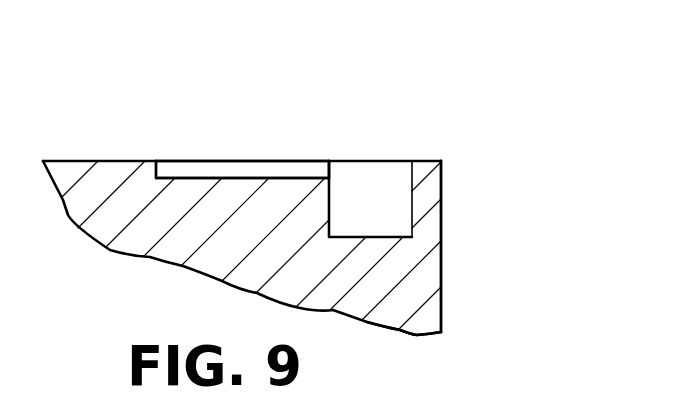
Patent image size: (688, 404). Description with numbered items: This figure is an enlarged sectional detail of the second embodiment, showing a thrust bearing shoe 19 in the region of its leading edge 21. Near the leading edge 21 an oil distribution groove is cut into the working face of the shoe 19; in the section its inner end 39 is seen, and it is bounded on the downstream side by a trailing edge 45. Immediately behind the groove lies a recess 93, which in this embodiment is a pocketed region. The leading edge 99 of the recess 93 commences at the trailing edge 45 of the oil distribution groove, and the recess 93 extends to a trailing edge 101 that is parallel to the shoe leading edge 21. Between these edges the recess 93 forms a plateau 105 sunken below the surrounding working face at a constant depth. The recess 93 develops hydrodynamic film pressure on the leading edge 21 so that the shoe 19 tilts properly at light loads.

The shoe 19 is at (282, 222).
The leading edge 21 is at (428, 180).
The inner end 39 is at (381, 222).
The trailing edge 45 is at (330, 197).
The recess 93 is at (300, 170).
The leading edge 99 is at (328, 178).
The trailing edge 101 is at (163, 161).
The plateau 105 is at (261, 178).